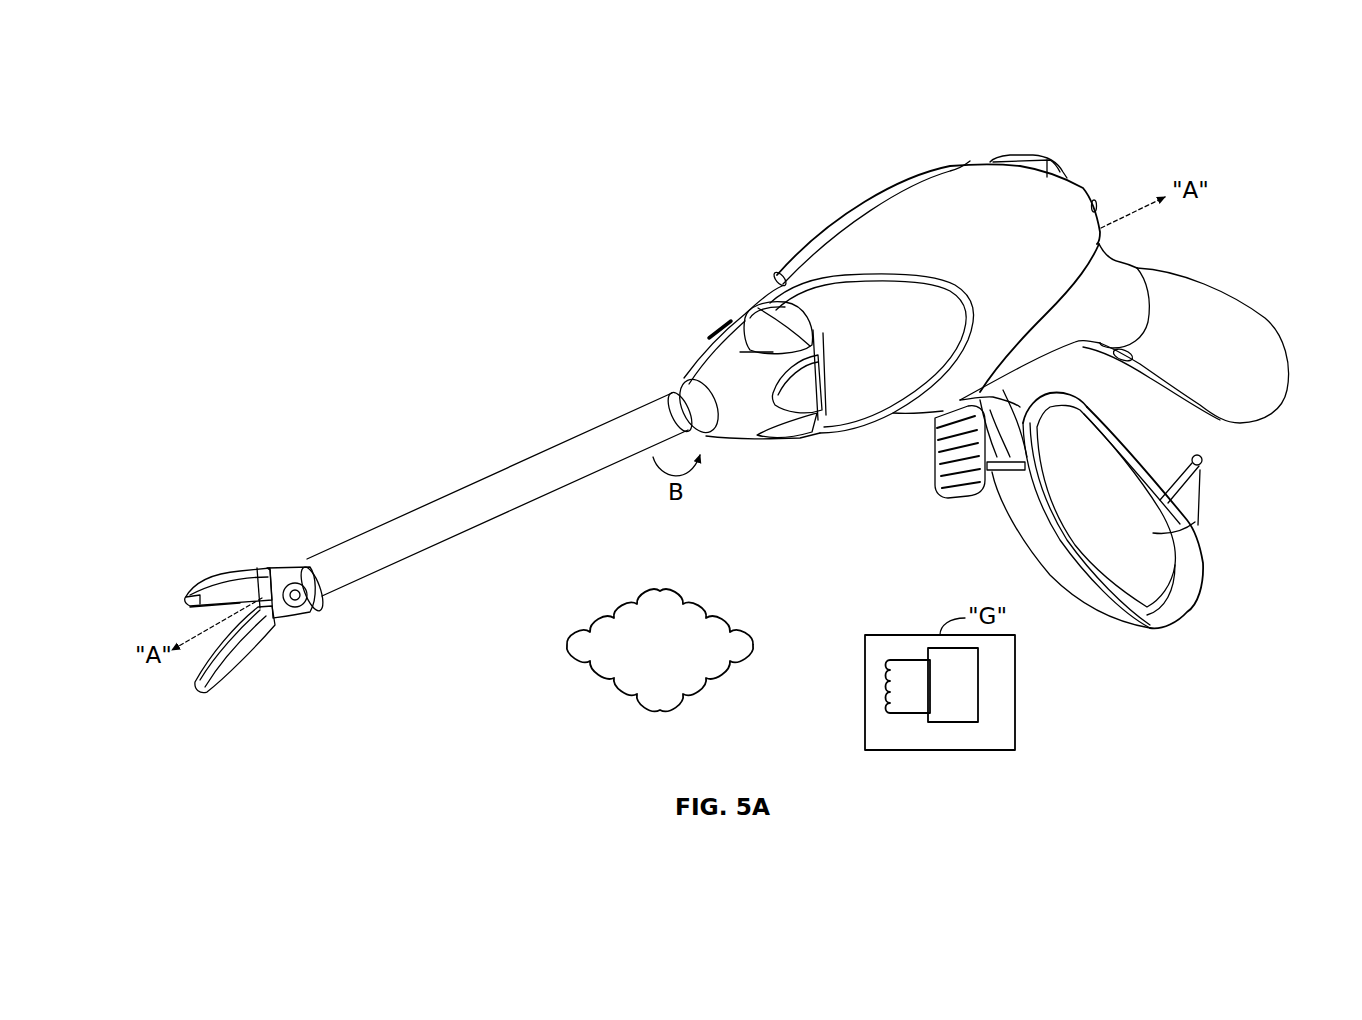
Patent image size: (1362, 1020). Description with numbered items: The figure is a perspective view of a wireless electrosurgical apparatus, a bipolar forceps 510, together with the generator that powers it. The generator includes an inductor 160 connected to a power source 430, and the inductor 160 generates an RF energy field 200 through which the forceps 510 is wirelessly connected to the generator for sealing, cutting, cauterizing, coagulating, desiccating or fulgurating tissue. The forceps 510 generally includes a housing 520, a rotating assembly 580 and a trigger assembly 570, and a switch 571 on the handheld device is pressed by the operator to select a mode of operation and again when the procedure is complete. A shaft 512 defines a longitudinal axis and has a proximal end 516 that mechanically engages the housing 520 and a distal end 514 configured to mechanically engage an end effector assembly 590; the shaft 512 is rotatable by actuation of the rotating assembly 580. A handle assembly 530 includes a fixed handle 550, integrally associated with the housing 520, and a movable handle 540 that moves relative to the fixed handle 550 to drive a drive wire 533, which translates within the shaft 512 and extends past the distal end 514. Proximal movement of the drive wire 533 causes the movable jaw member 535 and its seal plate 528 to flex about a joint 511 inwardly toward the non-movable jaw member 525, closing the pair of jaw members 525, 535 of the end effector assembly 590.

The bipolar forceps 510 is at (810, 206).
The housing 520 is at (1095, 190).
The rotating assembly 580 is at (720, 318).
The proximal end 516 is at (661, 404).
The shaft 512 is at (515, 492).
The fixed handle 550 is at (1270, 342).
The trigger assembly 570 is at (912, 458).
The switch 571 is at (945, 468).
The movable handle 540 is at (1188, 578).
The handle assembly 530 is at (1200, 612).
The end effector assembly 590 is at (242, 599).
The distal end 514 is at (310, 560).
The joint 511 is at (305, 604).
The drive wire 533 is at (250, 572).
The jaw member 535 is at (186, 602).
The seal plate 528 is at (195, 608).
The jaw member 525 is at (200, 690).
The RF energy field 200 is at (662, 590).
The inductor 160 is at (885, 683).
The power source 430 is at (975, 688).